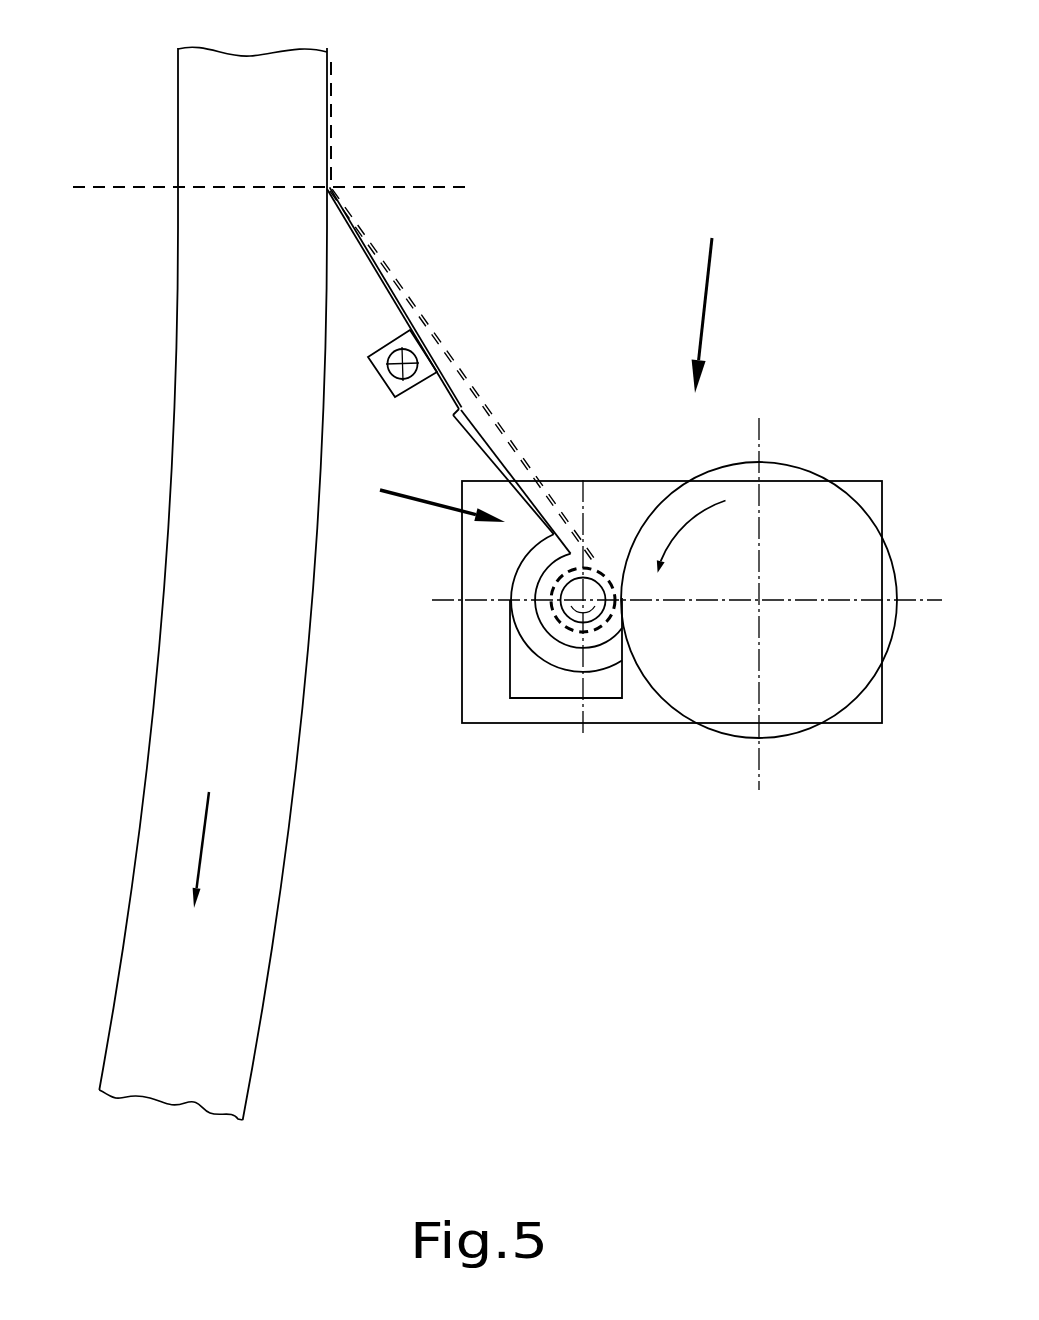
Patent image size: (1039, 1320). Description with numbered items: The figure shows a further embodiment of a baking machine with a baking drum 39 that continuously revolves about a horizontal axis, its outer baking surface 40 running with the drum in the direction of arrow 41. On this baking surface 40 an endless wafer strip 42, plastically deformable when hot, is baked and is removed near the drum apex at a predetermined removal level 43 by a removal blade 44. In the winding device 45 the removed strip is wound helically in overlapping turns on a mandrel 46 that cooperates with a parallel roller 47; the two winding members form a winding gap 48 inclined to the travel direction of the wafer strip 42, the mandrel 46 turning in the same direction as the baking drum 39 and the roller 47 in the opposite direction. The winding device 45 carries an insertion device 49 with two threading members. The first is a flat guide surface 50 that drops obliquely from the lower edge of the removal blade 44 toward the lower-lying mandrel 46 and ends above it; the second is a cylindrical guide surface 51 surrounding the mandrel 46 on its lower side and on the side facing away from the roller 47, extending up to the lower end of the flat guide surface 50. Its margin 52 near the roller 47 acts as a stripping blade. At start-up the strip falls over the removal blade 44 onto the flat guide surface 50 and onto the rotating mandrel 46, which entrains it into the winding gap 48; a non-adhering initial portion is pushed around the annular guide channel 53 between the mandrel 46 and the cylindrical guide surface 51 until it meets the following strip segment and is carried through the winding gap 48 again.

The baking drum 39 is at (182, 568).
The baking surface 40 is at (258, 1047).
The arrow 41 is at (202, 843).
The wafer strip 42 is at (332, 108).
The removal level 43 is at (102, 187).
The removal blade 44 is at (373, 277).
The winding device 45 is at (710, 292).
The mandrel 46 is at (592, 627).
The roller 47 is at (812, 482).
The winding gap 48 is at (616, 595).
The insertion device 49 is at (612, 596).
The flat guide surface 50 is at (477, 427).
The cylindrical guide surface 51 is at (545, 590).
The margin 52 is at (622, 632).
The annular guide channel 53 is at (547, 618).